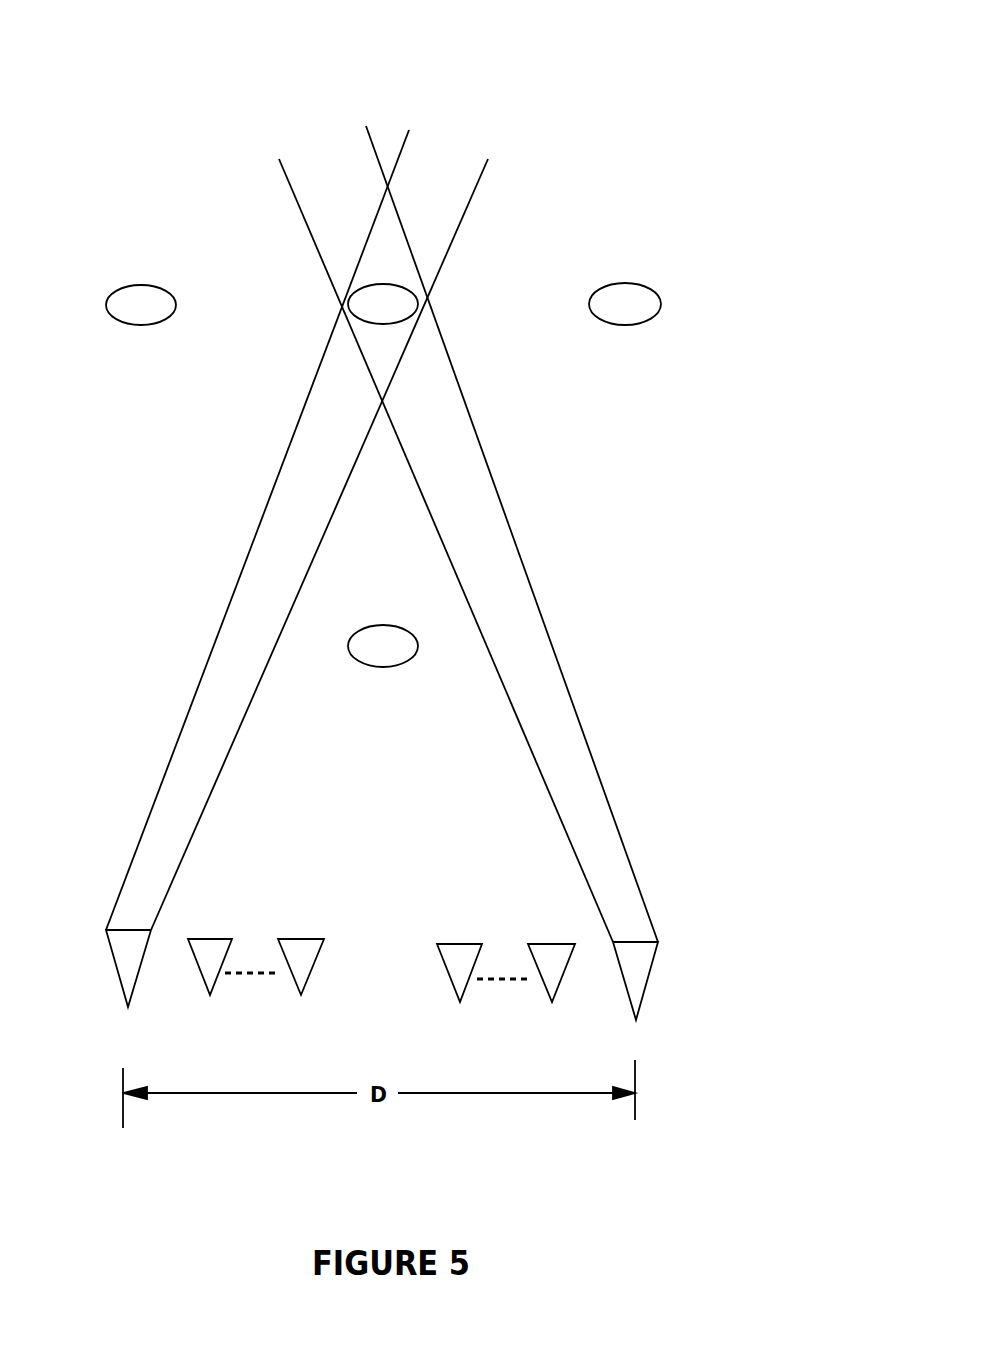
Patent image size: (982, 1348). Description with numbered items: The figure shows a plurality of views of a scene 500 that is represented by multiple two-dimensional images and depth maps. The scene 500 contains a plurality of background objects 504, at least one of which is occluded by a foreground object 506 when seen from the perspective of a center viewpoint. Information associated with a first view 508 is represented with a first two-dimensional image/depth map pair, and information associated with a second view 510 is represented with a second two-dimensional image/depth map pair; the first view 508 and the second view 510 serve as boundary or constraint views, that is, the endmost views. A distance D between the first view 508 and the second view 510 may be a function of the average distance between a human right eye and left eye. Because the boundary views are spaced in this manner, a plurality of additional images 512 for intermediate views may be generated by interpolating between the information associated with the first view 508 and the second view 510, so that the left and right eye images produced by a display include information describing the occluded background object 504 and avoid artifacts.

The scene 500 is at (798, 88).
The background objects 504 is at (349, 312).
The foreground object 506 is at (395, 667).
The first view 508 is at (117, 972).
The second view 510 is at (650, 977).
The additional images 512 is at (352, 913).